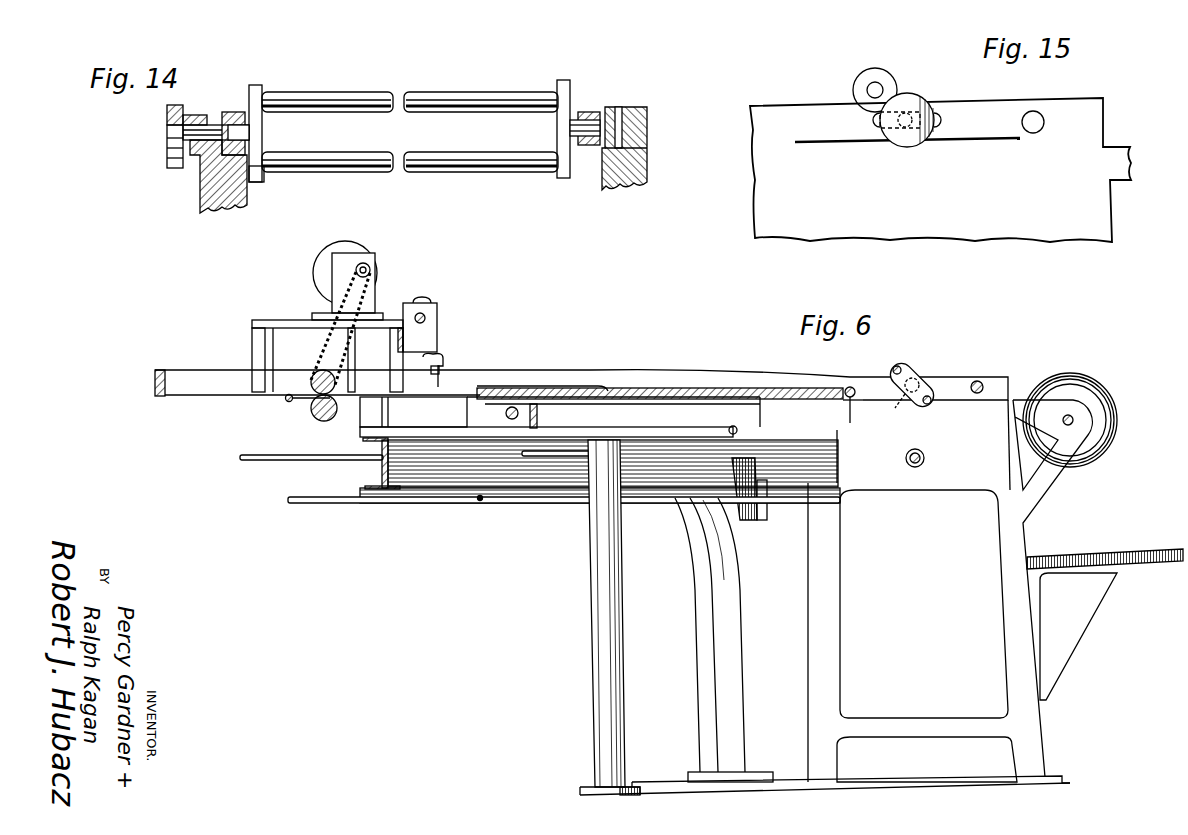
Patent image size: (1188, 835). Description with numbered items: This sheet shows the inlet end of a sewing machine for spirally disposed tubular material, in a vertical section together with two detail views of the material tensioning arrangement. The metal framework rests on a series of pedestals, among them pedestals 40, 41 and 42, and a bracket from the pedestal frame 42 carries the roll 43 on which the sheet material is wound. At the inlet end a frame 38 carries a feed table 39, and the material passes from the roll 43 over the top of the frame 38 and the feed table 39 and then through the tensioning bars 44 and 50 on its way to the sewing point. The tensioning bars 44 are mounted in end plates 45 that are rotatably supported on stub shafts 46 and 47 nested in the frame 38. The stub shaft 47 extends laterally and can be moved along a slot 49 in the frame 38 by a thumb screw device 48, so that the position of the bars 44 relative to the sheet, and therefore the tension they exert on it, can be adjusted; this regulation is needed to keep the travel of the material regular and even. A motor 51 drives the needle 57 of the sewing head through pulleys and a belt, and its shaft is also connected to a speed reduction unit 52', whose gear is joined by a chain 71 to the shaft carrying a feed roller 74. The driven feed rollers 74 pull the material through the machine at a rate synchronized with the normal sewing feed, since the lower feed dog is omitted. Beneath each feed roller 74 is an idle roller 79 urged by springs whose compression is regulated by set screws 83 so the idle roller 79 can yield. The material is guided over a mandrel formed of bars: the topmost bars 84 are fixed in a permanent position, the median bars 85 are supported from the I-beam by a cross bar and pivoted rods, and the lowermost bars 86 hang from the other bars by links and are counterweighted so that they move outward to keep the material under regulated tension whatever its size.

In FIG. 14, the frame 38 is at (247, 205).
In FIG. 15, the frame 38 is at (1098, 219).
In FIG. 6, the frame 38 is at (530, 370).
In FIG. 6, the feed table 39 is at (697, 388).
In FIG. 6, the pedestal 40 is at (590, 603).
In FIG. 6, the pedestal 41 is at (735, 590).
In FIG. 6, the pedestal frame 42 is at (1020, 556).
In FIG. 6, the roll 43 is at (1117, 416).
In FIG. 14, the tensioning bars 44 is at (490, 108).
In FIG. 6, the tensioning bars 44 is at (932, 385).
In FIG. 14, the end plates 45 is at (262, 137).
In FIG. 6, the end plates 45 is at (892, 413).
In FIG. 14, the stub shaft 46 is at (590, 120).
In FIG. 14, the stub shaft 47 is at (241, 112).
In FIG. 14, the thumb screw device 48 is at (167, 118).
In FIG. 15, the thumb screw device 48 is at (922, 102).
In FIG. 15, the slot 49 is at (950, 120).
In FIG. 15, the tensioning bar 50 is at (1034, 110).
In FIG. 6, the tensioning bar 50 is at (980, 382).
In FIG. 6, the motor 51 is at (328, 262).
In FIG. 6, the speed reduction unit 52' is at (367, 324).
In FIG. 6, the needle 57 is at (437, 385).
In FIG. 6, the chain 71 is at (352, 332).
In FIG. 6, the feed roller 74 is at (315, 371).
In FIG. 6, the idle roller 79 is at (314, 418).
In FIG. 6, the set screws 83 is at (617, 425).
In FIG. 6, the topmost mandrel bars 84 is at (286, 401).
In FIG. 6, the median mandrel bars 85 is at (282, 463).
In FIG. 6, the lowermost mandrel bars 86 is at (356, 507).